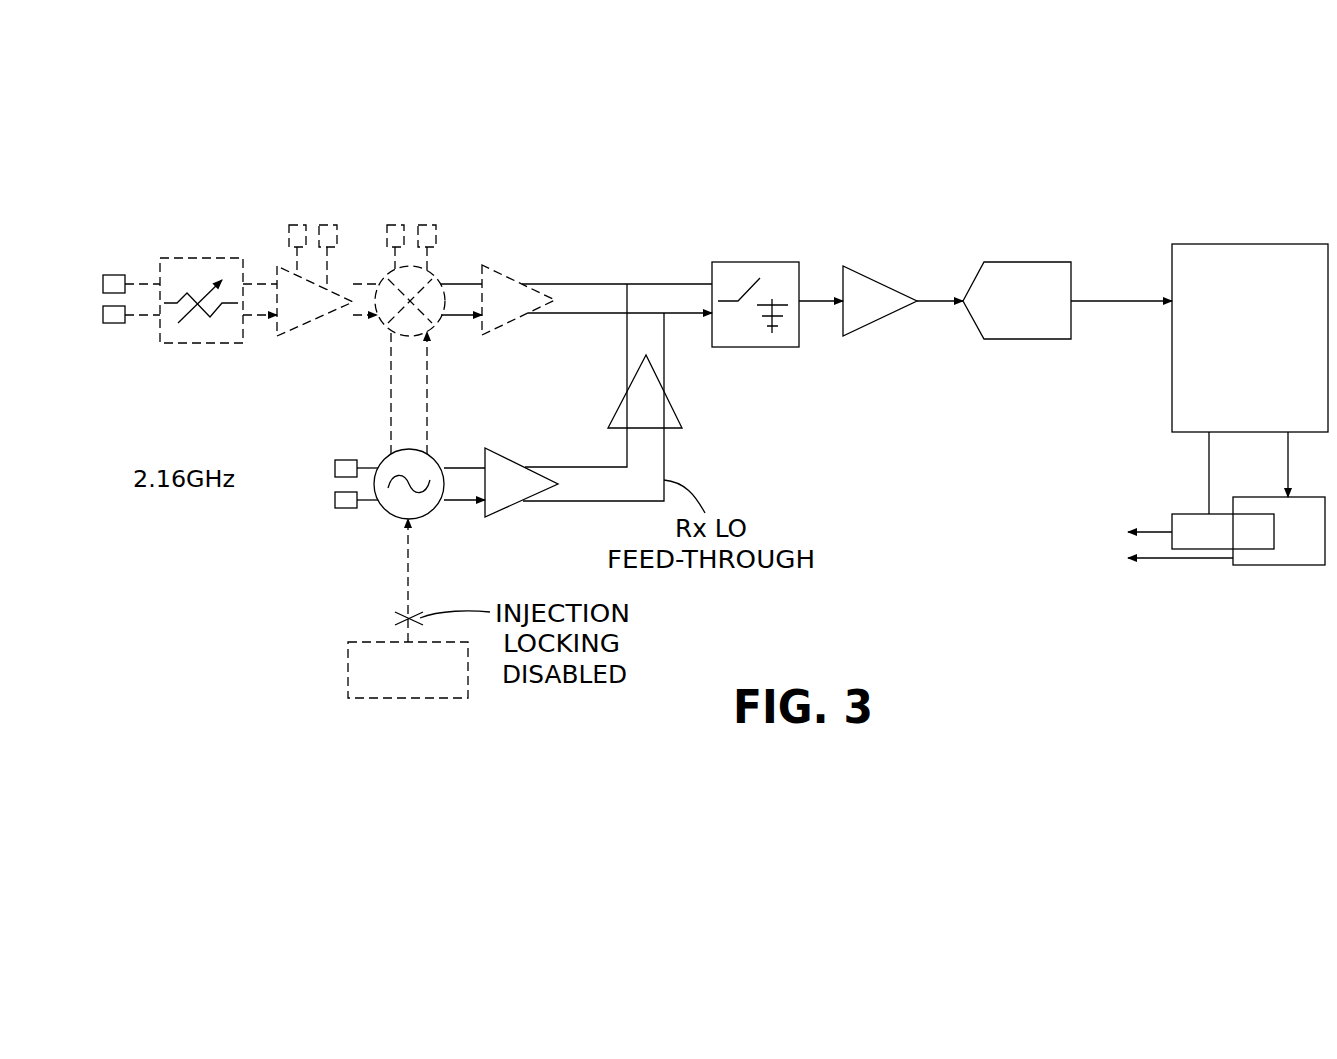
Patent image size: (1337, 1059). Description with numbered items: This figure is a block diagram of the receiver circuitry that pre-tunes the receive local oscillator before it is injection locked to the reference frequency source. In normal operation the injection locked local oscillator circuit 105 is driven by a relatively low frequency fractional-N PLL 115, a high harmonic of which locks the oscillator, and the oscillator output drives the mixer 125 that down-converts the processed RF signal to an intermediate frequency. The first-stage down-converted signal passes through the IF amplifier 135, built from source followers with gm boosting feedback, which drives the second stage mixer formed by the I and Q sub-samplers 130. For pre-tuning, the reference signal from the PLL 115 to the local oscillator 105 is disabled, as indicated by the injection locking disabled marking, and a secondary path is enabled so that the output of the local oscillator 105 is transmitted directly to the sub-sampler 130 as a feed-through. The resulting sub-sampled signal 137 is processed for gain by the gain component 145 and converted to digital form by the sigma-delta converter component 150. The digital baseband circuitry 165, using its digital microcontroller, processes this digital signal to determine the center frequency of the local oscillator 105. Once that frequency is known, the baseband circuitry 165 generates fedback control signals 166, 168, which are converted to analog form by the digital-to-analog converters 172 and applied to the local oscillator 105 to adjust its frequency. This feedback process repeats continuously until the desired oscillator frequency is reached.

The injection locked local oscillator circuit (Rx LO) 105 is at (427, 510).
The fractional-N PLL 115 is at (348, 672).
The mixer 125 is at (428, 293).
The sub-samplers 130 is at (743, 272).
The IF amplifier (IFA) 135 is at (503, 295).
The sub-sampled signal 137 is at (822, 300).
The gain component 145 is at (882, 297).
The DAC component (sigma-delta ADC) 150 is at (1013, 262).
The digital baseband circuitry 165 is at (1291, 262).
The fedback control signal 166 is at (1158, 530).
The fedback control signal 168 is at (1168, 560).
The digital-to-analog converters 172 is at (1300, 532).